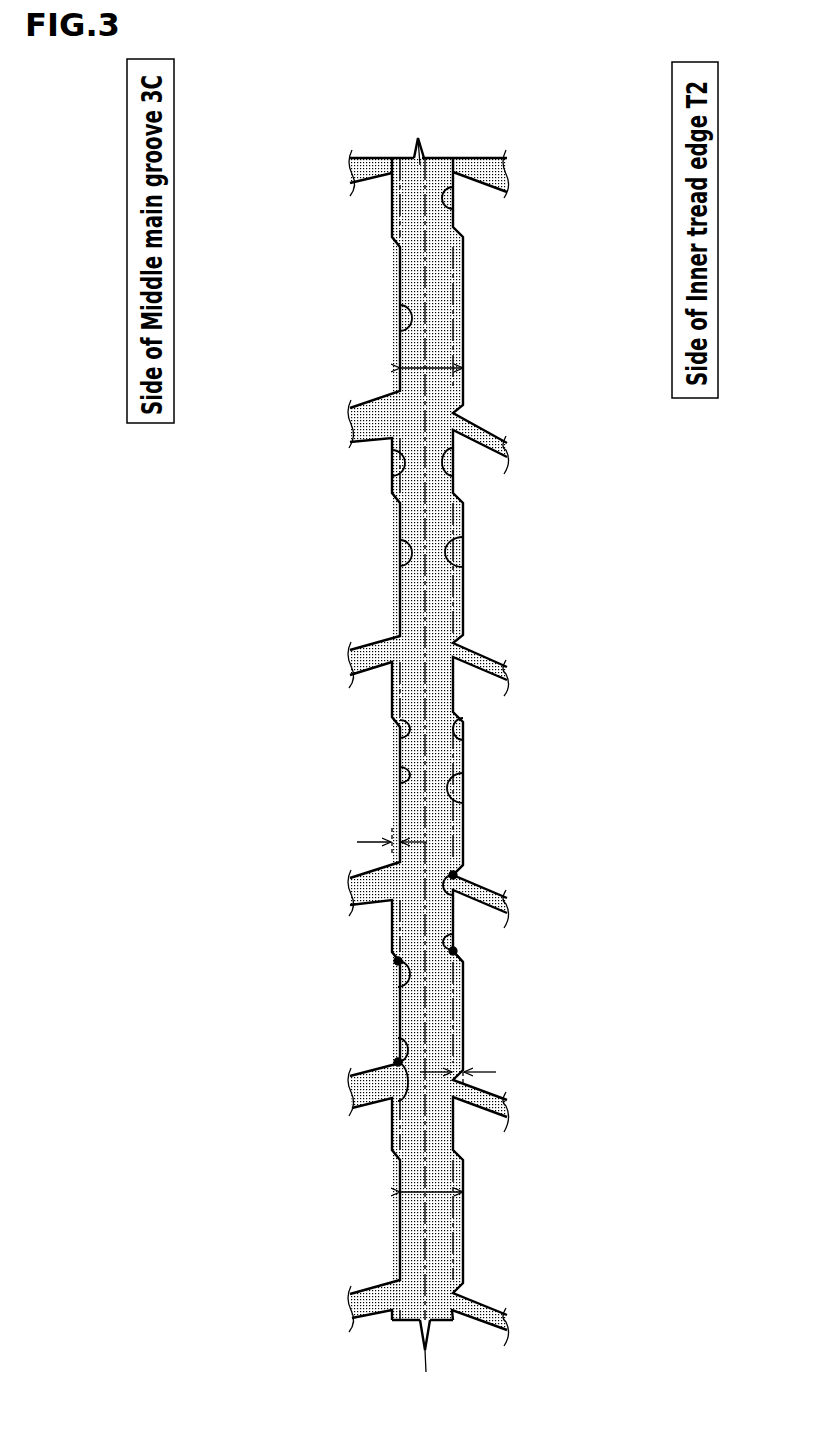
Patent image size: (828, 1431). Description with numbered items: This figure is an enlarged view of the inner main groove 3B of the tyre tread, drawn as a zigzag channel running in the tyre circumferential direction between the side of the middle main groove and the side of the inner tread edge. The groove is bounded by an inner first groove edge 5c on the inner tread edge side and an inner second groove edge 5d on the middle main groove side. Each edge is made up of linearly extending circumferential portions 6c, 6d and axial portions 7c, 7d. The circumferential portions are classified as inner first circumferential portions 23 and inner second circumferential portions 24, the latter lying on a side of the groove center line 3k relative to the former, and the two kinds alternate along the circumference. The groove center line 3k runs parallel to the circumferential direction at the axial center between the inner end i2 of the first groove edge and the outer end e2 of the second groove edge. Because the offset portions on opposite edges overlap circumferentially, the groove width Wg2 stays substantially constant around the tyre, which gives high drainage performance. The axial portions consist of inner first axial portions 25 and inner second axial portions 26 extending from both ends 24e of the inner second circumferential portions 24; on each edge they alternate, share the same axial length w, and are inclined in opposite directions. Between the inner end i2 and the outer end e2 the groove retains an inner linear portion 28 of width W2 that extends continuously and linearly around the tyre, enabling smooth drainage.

The inner main groove 3B is at (431, 141).
The inner end i2 is at (456, 207).
The groove center line 3k is at (430, 297).
The outer end e2 is at (401, 322).
The groove width Wg2 is at (450, 366).
The inner first circumferential portions 23 is at (392, 472).
The inner second circumferential portions 24 is at (453, 472).
The inner second groove edge 5d is at (292, 712).
The axial portions 7d is at (400, 737).
The circumferential portions 6d is at (400, 778).
The inner first groove edge 5c is at (570, 725).
The axial portions 7c is at (463, 737).
The circumferential portions 6c is at (463, 796).
The axial length w is at (392, 841).
The inner first axial portions 25 is at (461, 854).
The ends 24e is at (453, 896).
The inner second axial portions 26 is at (459, 968).
The width W2 is at (442, 1190).
The inner linear portion 28 is at (410, 1227).